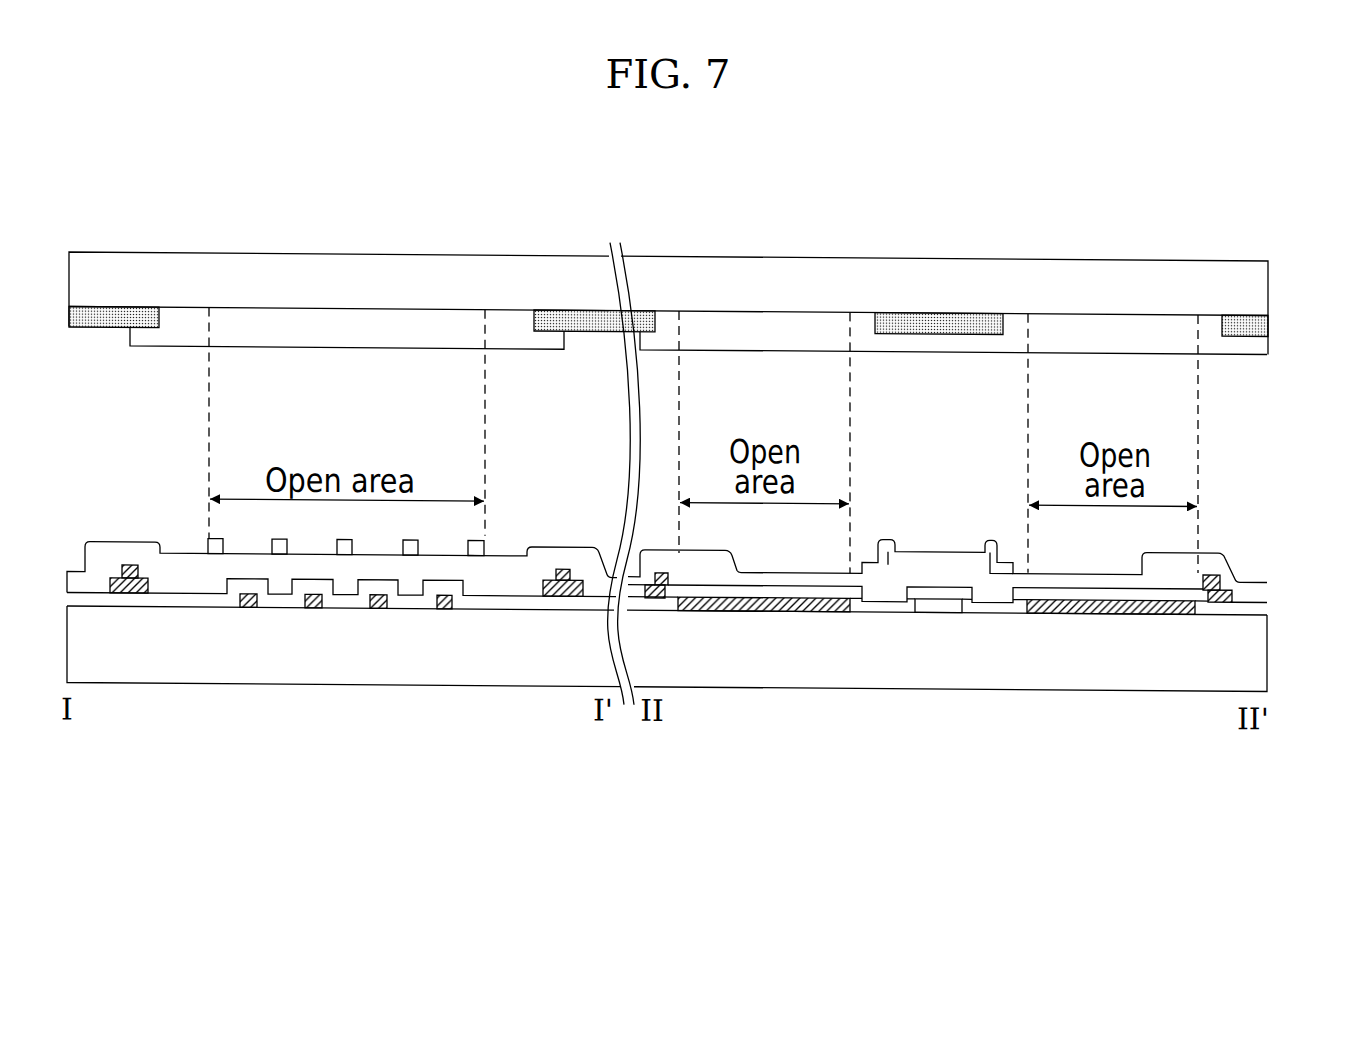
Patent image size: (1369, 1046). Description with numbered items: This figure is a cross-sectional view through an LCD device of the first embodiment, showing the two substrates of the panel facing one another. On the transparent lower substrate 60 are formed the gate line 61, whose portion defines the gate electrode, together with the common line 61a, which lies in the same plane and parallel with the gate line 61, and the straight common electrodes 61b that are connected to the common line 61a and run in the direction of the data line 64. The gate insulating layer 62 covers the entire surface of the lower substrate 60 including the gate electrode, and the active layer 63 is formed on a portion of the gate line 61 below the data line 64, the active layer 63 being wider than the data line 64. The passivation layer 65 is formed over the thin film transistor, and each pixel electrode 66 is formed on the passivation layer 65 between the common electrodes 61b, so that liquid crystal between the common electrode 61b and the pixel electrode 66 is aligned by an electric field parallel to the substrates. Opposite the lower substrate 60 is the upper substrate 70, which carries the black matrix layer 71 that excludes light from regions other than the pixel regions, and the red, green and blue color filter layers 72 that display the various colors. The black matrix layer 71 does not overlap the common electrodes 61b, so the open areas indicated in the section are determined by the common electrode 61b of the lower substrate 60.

The lower substrate 60 is at (1252, 653).
The gate line 61 is at (935, 606).
The common line 61a is at (730, 608).
The common electrode 61b is at (312, 605).
The gate insulating layer 62 is at (876, 602).
The active layer 63 is at (122, 588).
The data line 64 is at (130, 566).
The passivation layer 65 is at (793, 592).
The pixel electrode 66 is at (477, 537).
The upper substrate 70 is at (755, 272).
The black matrix layer 71 is at (576, 318).
The color filter layer 72 is at (345, 322).